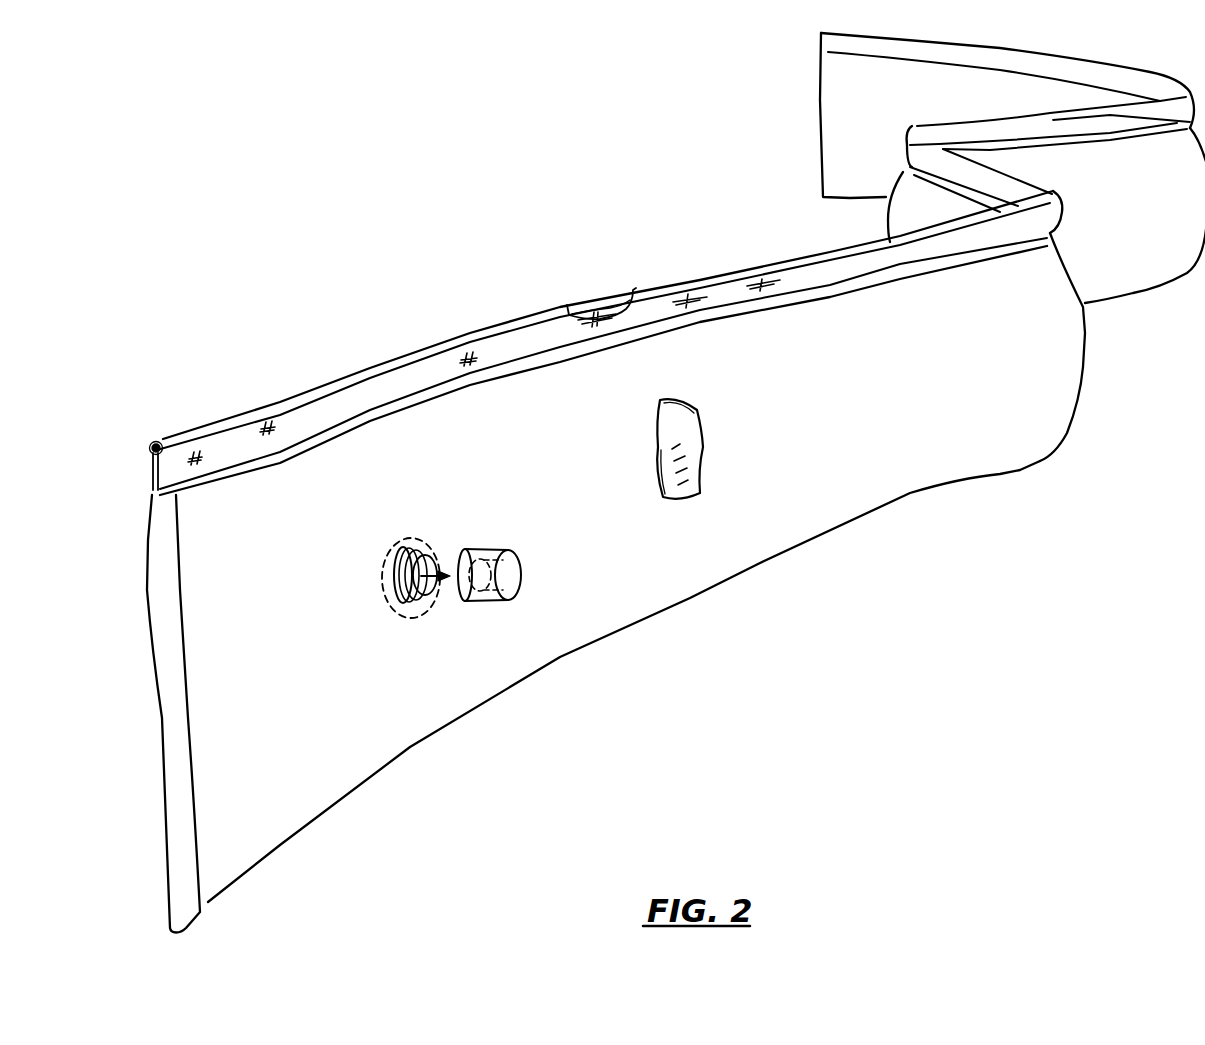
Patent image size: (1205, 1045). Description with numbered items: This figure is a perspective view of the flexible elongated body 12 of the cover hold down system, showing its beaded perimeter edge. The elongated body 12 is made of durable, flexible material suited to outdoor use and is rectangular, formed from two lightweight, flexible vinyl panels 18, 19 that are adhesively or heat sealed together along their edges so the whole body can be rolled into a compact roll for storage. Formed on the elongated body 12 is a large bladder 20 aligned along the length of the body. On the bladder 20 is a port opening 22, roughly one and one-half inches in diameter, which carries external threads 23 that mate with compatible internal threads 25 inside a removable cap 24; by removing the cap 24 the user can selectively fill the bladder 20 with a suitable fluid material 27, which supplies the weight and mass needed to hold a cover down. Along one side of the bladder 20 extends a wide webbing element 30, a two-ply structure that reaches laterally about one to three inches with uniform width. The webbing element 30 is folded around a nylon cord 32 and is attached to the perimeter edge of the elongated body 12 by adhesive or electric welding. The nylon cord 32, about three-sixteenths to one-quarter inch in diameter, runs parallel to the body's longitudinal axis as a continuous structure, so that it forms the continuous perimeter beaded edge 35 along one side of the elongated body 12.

The elongated body 12 is at (620, 625).
The vinyl panel 18 is at (177, 642).
The vinyl panel 19 is at (138, 545).
The bladder 20 is at (872, 420).
The port opening 22 is at (433, 568).
The external threads 23 is at (393, 562).
The removable cap 24 is at (513, 556).
The internal threads 25 is at (477, 595).
The fluid material 27 is at (698, 490).
The webbing element 30 is at (393, 379).
The nylon cord 32 is at (153, 446).
The beaded edge 35 is at (749, 270).